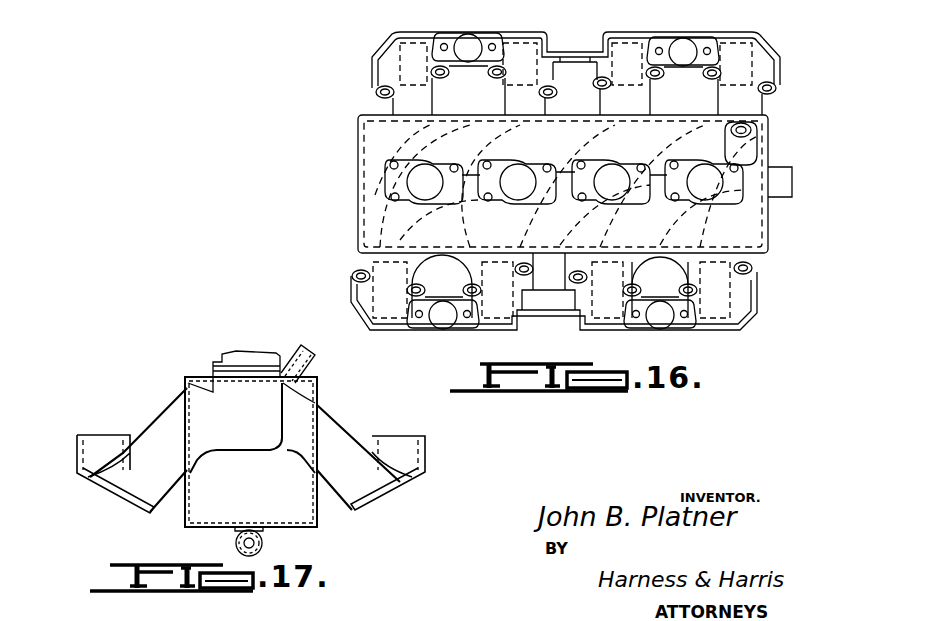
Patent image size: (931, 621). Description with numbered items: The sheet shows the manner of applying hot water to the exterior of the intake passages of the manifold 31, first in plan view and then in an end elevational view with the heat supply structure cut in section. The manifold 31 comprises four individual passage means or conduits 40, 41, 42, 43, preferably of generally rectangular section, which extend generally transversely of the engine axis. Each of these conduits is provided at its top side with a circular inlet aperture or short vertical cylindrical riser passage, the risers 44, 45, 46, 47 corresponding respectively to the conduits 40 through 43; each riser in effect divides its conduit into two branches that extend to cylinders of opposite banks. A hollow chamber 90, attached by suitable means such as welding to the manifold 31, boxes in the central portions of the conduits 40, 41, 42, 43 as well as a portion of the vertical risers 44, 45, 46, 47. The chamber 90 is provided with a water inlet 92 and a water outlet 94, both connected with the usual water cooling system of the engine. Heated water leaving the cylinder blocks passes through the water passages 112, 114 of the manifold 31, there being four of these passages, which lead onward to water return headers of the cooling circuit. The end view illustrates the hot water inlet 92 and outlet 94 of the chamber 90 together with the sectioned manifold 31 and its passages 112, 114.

In FIG. 16, the manifold 31 is at (372, 78).
In FIG. 17, the manifold 31 is at (338, 420).
In FIG. 16, the conduit 40 is at (592, 260).
In FIG. 16, the conduit 41 is at (690, 260).
In FIG. 16, the conduit 42 is at (478, 260).
In FIG. 16, the conduit 43 is at (368, 250).
In FIG. 16, the riser passage 44 is at (700, 165).
In FIG. 16, the riser passage 45 is at (620, 155).
In FIG. 16, the riser passage 46 is at (510, 170).
In FIG. 16, the riser passage 47 is at (430, 150).
In FIG. 17, the hollow chamber 90 is at (185, 388).
In FIG. 17, the water inlet 92 is at (305, 352).
In FIG. 17, the water outlet 94 is at (262, 542).
In FIG. 16, the water passage 112 is at (468, 48).
In FIG. 17, the water passage 112 is at (412, 436).
In FIG. 16, the water passage 114 is at (443, 327).
In FIG. 17, the water passage 114 is at (97, 445).